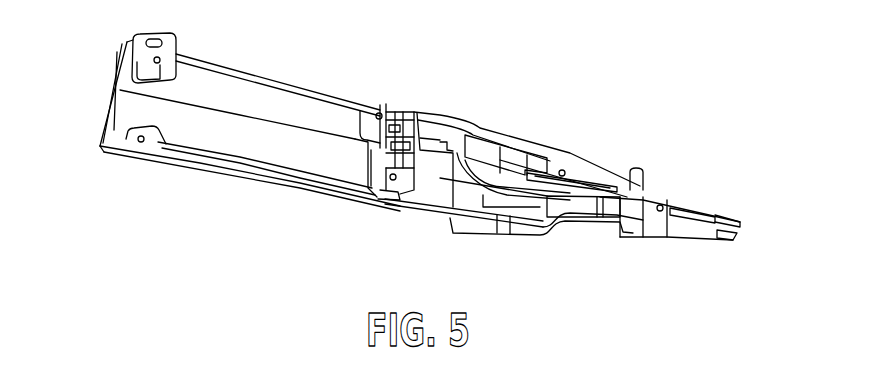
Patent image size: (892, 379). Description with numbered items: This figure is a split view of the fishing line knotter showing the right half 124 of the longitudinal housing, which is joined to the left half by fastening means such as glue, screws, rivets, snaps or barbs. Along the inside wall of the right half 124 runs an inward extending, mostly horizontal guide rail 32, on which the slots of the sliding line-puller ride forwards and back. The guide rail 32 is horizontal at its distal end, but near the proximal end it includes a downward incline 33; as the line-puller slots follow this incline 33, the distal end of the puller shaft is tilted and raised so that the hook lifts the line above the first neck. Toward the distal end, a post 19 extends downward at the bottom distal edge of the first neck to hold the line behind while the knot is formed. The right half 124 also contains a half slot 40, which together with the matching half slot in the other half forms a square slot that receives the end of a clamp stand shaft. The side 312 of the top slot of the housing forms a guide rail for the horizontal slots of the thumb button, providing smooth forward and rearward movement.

The right half 124 is at (243, 196).
The half slot 40 is at (412, 115).
The downward incline 33 is at (471, 176).
The guide rail 32 is at (545, 200).
The post 19 is at (637, 170).
The side of slot 312 is at (437, 225).